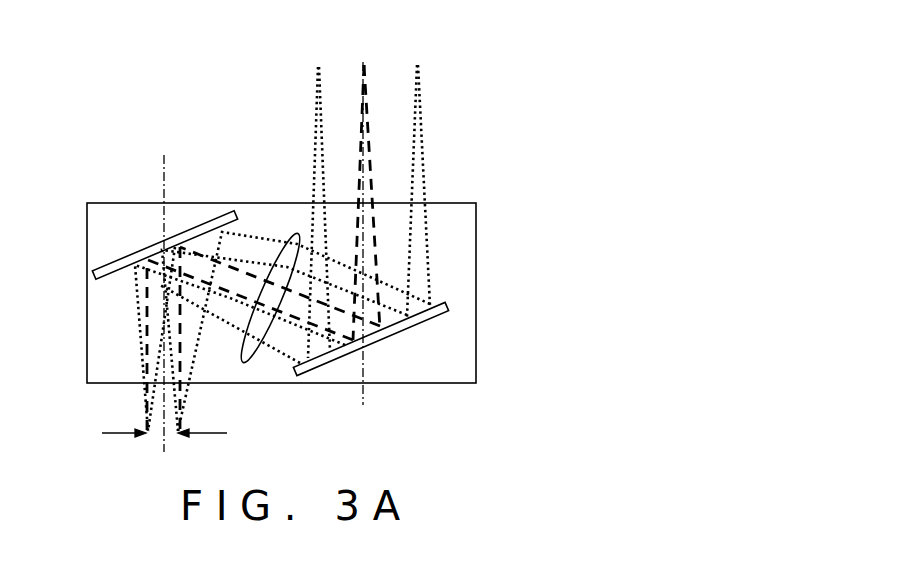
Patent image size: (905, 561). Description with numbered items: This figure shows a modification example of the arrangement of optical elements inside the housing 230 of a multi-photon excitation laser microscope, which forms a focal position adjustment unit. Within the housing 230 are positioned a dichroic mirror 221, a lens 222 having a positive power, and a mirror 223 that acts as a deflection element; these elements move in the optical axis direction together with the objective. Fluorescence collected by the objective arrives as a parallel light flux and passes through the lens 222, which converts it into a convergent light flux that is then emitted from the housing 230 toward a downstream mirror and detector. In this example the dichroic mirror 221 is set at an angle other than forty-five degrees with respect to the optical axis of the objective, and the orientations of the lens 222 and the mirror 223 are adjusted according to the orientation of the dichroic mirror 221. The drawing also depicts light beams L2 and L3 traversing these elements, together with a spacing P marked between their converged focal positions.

The dichroic mirror 221 is at (118, 262).
The lens 222 is at (258, 362).
The mirror 223 is at (397, 333).
The housing 230 is at (477, 252).
The second light beam L2 is at (370, 147).
The third light beam L3 is at (318, 70).
The pupil P is at (149, 436).